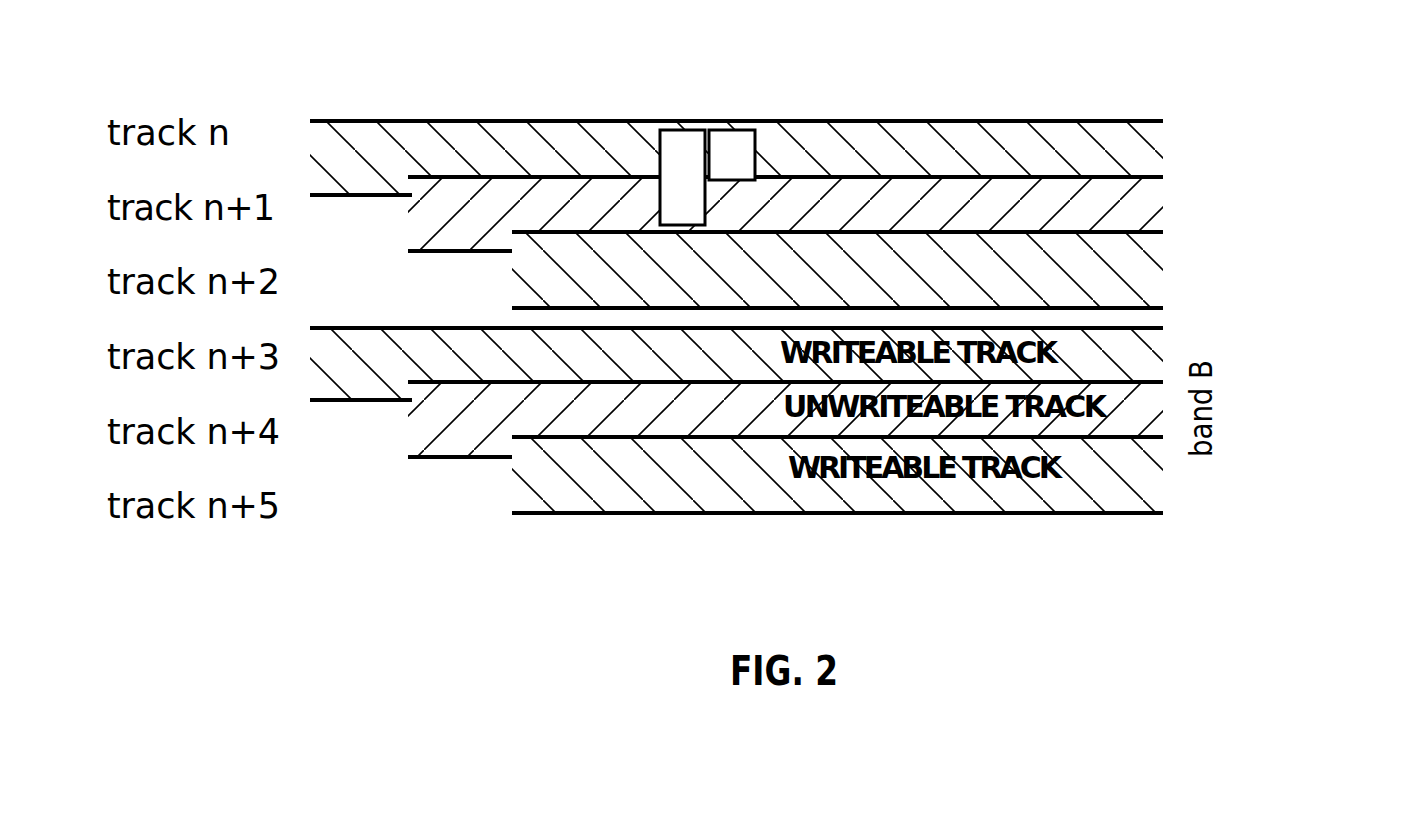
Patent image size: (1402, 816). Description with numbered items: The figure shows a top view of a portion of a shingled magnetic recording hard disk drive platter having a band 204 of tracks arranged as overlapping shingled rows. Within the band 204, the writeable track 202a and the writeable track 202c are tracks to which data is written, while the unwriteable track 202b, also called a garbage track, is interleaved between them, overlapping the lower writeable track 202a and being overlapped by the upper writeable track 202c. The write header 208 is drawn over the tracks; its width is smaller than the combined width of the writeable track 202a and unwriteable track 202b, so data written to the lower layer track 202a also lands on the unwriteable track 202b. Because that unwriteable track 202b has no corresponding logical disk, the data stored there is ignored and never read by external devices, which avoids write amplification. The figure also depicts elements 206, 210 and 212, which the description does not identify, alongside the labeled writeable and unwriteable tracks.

The writeable track 202a is at (367, 135).
The unwriteable track 202b is at (503, 173).
The writeable track 202c is at (625, 222).
The band 204 is at (801, 157).
The read head 206 is at (732, 128).
The write header 208 is at (682, 130).
The writeable track 210 is at (903, 124).
The unwriteable track 212 is at (1037, 230).